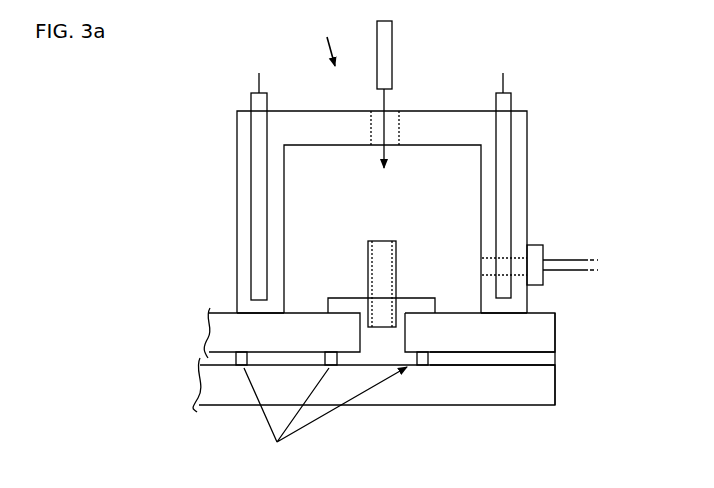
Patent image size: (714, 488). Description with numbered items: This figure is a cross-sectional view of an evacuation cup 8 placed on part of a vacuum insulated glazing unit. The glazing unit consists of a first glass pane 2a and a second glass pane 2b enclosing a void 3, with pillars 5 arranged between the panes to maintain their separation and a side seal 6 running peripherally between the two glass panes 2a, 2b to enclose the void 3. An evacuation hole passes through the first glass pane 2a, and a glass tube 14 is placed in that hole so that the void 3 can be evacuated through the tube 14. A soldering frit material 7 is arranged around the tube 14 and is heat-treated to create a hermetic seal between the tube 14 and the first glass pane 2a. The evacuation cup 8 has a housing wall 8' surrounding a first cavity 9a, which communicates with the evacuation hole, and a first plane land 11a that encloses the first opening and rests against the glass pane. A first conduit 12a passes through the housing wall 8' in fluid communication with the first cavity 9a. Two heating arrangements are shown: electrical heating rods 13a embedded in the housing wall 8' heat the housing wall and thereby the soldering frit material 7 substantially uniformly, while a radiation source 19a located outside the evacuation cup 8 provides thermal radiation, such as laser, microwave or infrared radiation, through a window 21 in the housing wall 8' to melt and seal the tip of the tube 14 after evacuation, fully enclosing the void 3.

The evacuation cup 8 is at (327, 38).
The housing wall 8' is at (382, 185).
The first cavity 9a is at (333, 183).
The radiation source 19a is at (383, 60).
The window 21 is at (392, 118).
The electrical heating rods 13a is at (261, 147).
The glass tube 14 is at (388, 270).
The soldering frit material 7 is at (342, 305).
The first conduit 12a is at (492, 272).
The first plane land 11a is at (249, 310).
The first glass pane 2a is at (485, 332).
The second glass pane 2b is at (484, 390).
The pillars 5 is at (332, 412).
The void 3 is at (502, 362).
The side seal 6 is at (560, 372).